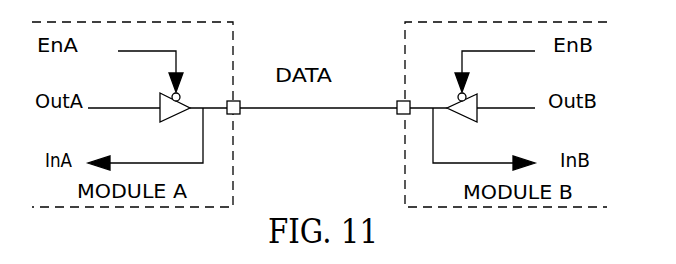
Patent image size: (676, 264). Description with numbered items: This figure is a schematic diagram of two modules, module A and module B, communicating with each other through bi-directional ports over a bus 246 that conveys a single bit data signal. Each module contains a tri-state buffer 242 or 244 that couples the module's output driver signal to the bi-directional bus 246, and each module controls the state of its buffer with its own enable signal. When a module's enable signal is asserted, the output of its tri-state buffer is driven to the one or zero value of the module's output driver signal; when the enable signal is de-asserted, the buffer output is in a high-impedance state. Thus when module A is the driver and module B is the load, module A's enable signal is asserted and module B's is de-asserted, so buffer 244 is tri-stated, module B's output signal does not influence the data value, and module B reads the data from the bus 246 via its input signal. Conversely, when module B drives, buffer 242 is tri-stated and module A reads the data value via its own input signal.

The tri-state buffer 242 is at (164, 118).
The tri-state buffer 244 is at (474, 116).
The bus 246 is at (325, 109).